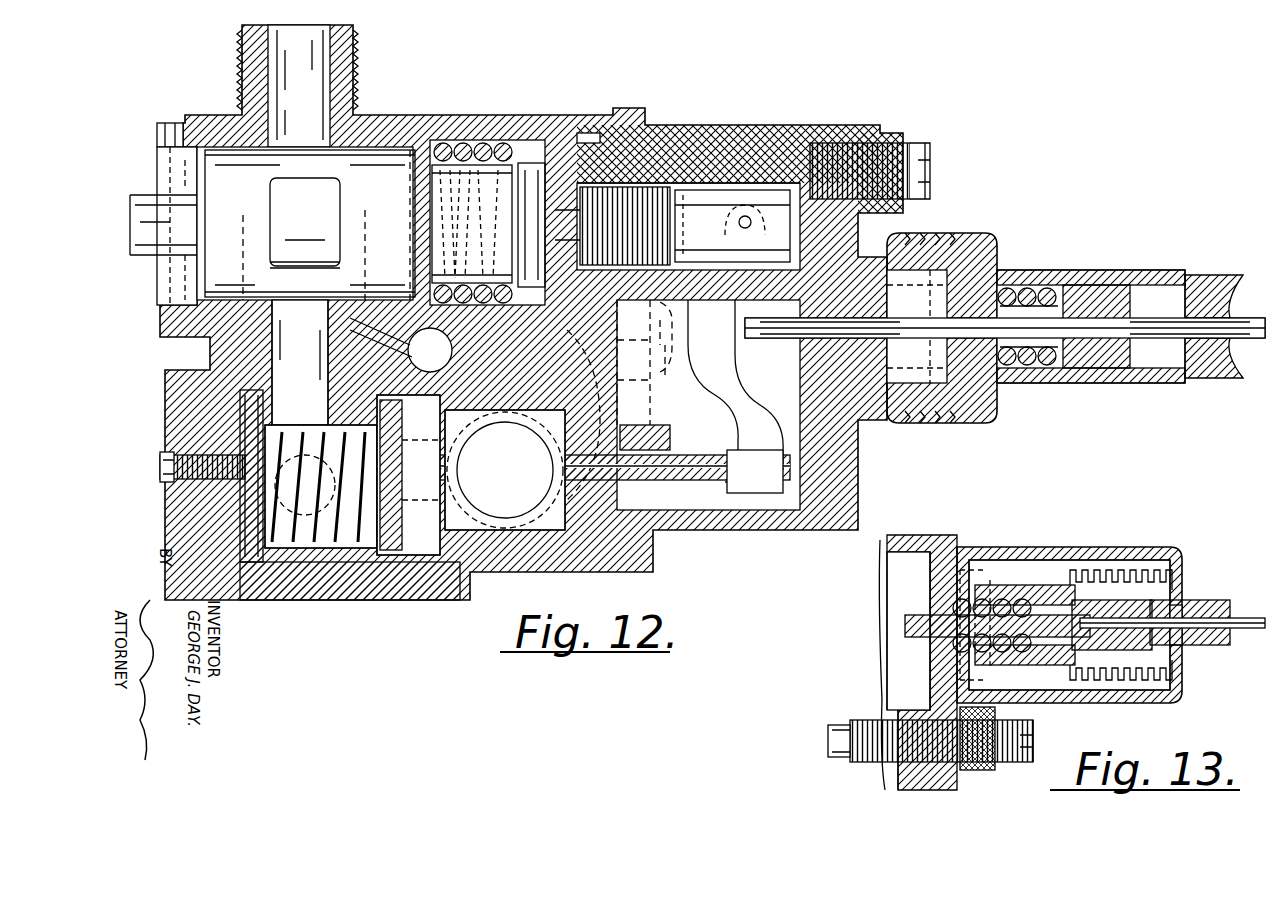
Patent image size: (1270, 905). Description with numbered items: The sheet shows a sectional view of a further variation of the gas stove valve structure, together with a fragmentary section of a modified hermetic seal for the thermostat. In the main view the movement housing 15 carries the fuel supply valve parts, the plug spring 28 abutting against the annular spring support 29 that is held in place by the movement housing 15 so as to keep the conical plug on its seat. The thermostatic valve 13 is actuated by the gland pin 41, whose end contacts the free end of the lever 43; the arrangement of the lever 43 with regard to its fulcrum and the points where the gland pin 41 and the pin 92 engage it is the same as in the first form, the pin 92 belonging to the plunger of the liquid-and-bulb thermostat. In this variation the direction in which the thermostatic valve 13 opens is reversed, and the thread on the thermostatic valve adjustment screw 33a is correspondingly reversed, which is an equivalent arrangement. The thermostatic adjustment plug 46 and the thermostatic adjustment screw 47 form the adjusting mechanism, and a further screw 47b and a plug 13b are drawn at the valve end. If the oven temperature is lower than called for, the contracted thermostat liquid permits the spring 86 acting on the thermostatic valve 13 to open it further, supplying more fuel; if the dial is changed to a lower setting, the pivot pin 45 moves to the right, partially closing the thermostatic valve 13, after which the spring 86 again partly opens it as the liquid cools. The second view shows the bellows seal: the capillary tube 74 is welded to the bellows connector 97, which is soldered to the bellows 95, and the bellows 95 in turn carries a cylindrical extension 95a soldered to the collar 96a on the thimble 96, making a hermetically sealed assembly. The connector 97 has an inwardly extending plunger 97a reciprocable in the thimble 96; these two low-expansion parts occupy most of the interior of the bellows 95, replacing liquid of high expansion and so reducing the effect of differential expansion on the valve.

In FIG. 12, the movement housing 15 is at (860, 465).
In FIG. 12, the plug spring 28 is at (455, 140).
In FIG. 12, the annular spring support 29 is at (530, 150).
In FIG. 12, the thermostatic valve adjustment screw 33a is at (658, 265).
In FIG. 12, the pivot pin 45 is at (745, 228).
In FIG. 12, the thermostatic adjustment plug 46 is at (720, 140).
In FIG. 12, the thermostatic adjustment screw 47 is at (915, 142).
In FIG. 12, the screw 47b is at (168, 465).
In FIG. 12, the lever 43 is at (745, 405).
In FIG. 12, the gland pin 41 is at (715, 455).
In FIG. 12, the pin 92 is at (760, 338).
In FIG. 12, the spring 86 is at (300, 522).
In FIG. 12, the thermostatic valve 13 is at (400, 540).
In FIG. 12, the plug 13b is at (285, 578).
In FIG. 13, the thimble 96 is at (1068, 580).
In FIG. 13, the collar 96a is at (1000, 578).
In FIG. 13, the plunger 97a is at (1135, 590).
In FIG. 13, the bellows 95 is at (1115, 600).
In FIG. 13, the cylindrical extension 95a is at (1005, 590).
In FIG. 13, the bellows connector 97 is at (1215, 605).
In FIG. 13, the capillary tube 74 is at (1258, 618).